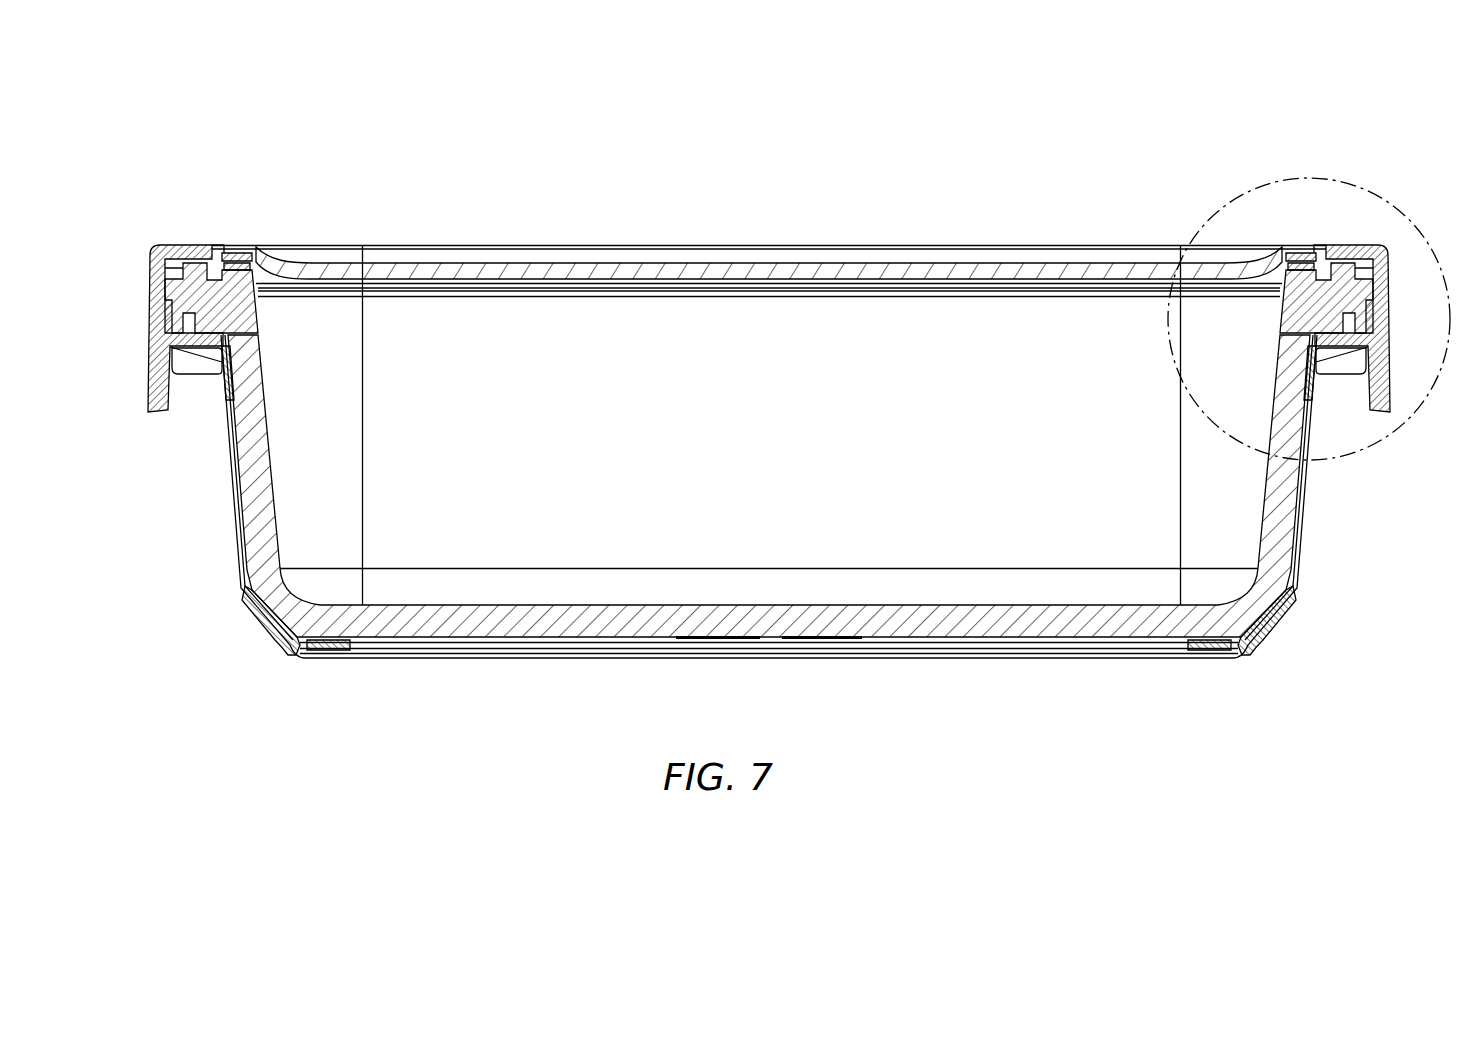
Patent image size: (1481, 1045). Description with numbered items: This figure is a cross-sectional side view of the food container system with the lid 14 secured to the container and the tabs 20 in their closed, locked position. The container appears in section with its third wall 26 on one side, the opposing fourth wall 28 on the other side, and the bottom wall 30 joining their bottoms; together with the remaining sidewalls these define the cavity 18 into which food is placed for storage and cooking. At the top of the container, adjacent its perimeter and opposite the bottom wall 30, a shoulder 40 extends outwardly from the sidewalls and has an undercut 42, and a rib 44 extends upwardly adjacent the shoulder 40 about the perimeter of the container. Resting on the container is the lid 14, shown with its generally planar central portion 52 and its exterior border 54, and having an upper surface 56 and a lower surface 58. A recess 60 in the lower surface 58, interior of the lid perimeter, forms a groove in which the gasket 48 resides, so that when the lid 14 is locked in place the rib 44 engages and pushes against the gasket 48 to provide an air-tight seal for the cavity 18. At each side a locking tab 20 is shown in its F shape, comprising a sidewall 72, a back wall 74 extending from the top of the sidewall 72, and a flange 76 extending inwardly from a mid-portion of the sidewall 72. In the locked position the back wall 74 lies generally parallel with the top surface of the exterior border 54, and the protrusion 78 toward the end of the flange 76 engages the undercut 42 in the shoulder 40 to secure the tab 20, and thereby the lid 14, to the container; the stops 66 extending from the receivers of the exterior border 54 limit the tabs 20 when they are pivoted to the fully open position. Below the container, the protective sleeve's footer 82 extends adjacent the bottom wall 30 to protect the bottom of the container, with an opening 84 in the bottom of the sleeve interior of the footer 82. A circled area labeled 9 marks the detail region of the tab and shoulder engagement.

The detail view circle 9 is at (1248, 178).
The lid 14 is at (524, 263).
The cavity 18 is at (529, 506).
The tabs 20 is at (1398, 263).
The third wall 26 is at (1282, 540).
The fourth wall 28 is at (262, 552).
The bottom wall 30 is at (918, 620).
The shoulder 40 is at (197, 320).
The undercut 42 is at (223, 337).
The rib 44 is at (233, 287).
The gasket 48 is at (250, 268).
The central portion 52 is at (716, 263).
The exterior border 54 is at (1312, 248).
The upper surface 56 is at (840, 263).
The lower surface 58 is at (937, 281).
The recess 60 is at (235, 255).
The stops 66 is at (1370, 258).
The sidewall 72 is at (153, 342).
The back wall 74 is at (173, 243).
The flange 76 is at (179, 347).
The protrusion 78 is at (1318, 322).
The footer 82 is at (1250, 662).
The opening 84 is at (1077, 646).